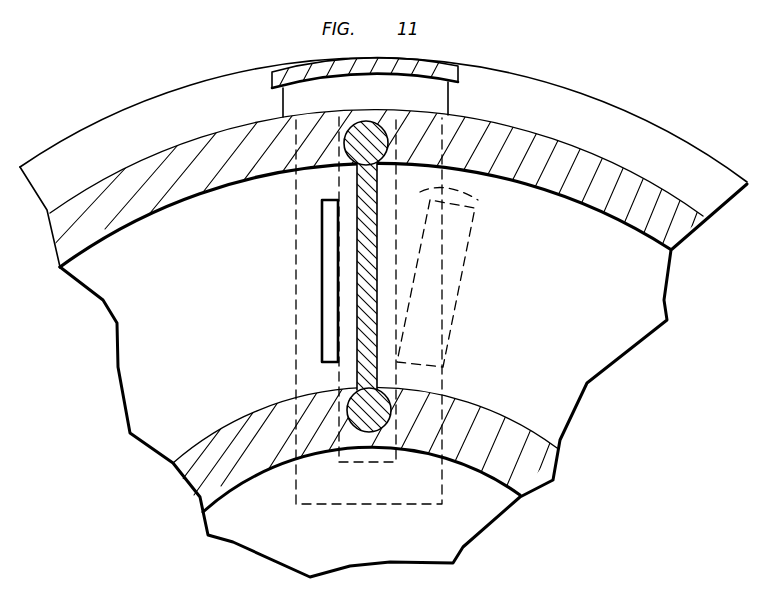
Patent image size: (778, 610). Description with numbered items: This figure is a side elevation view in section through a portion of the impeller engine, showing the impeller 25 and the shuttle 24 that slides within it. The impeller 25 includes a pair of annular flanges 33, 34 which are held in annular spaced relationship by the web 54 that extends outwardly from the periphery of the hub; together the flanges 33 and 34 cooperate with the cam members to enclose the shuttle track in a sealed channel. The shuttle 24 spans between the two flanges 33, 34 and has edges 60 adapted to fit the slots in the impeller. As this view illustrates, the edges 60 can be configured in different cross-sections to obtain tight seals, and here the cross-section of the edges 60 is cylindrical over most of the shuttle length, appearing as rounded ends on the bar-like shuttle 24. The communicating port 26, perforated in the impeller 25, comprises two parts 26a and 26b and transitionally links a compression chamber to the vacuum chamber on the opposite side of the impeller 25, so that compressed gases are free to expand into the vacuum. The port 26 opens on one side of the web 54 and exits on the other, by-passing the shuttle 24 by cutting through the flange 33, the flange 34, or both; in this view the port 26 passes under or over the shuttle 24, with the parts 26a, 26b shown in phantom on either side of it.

The shuttle 24 is at (365, 370).
The impeller 25 is at (657, 148).
The communicating port 26 is at (422, 92).
The first part of communicating port 26a is at (300, 197).
The second part of communicating port 26b is at (478, 200).
The annular flange 33 is at (578, 115).
The annular flange 34 is at (542, 472).
The web 54 is at (620, 322).
The edges 60 is at (362, 133).